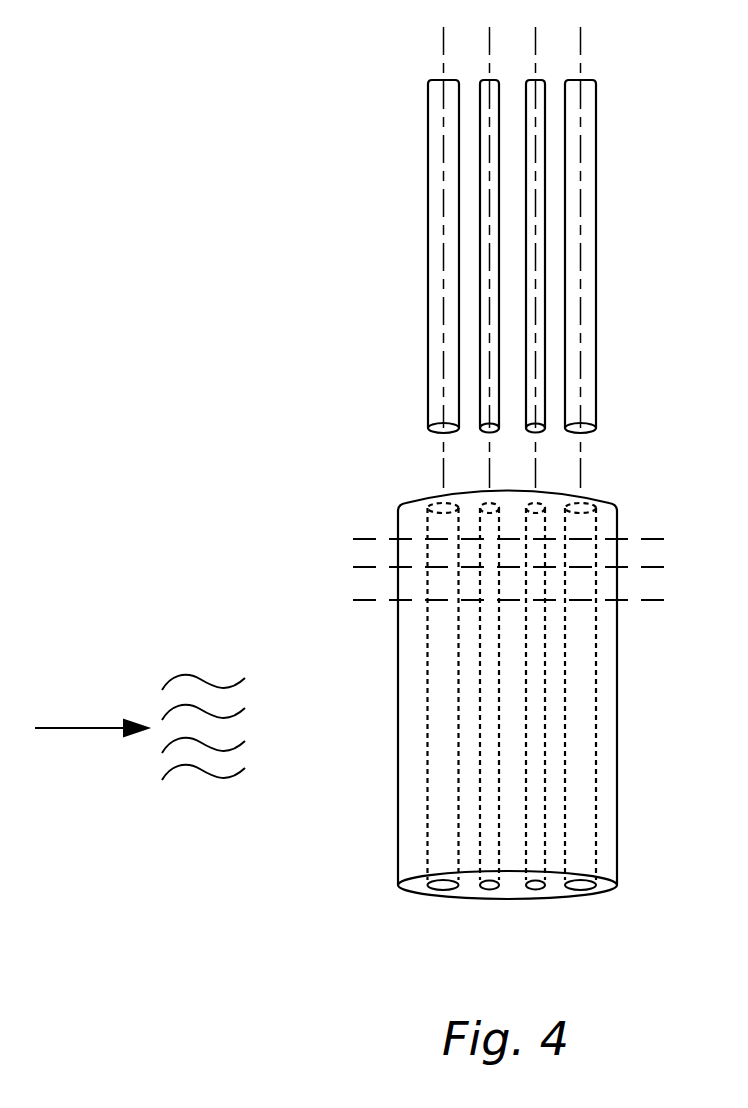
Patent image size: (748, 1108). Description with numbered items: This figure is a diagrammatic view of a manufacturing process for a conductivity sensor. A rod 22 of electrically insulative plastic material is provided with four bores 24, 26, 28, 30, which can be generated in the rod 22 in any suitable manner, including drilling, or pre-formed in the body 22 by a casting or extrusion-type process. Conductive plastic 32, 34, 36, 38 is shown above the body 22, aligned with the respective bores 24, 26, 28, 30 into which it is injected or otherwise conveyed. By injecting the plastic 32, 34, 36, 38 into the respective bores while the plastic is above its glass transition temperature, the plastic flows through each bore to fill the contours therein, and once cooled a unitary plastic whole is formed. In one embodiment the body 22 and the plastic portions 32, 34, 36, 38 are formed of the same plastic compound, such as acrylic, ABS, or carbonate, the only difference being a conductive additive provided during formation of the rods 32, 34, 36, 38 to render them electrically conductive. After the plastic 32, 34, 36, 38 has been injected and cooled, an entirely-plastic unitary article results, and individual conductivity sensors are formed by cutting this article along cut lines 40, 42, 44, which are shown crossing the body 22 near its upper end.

The rod 22 is at (617, 696).
The bore 24 is at (442, 892).
The bore 26 is at (488, 892).
The bore 28 is at (535, 892).
The bore 30 is at (580, 892).
The conductive plastic 32 is at (428, 130).
The conductive plastic 34 is at (482, 80).
The conductive plastic 36 is at (530, 80).
The conductive plastic 38 is at (597, 110).
The cut line 40 is at (652, 539).
The cut line 42 is at (652, 567).
The cut line 44 is at (652, 600).